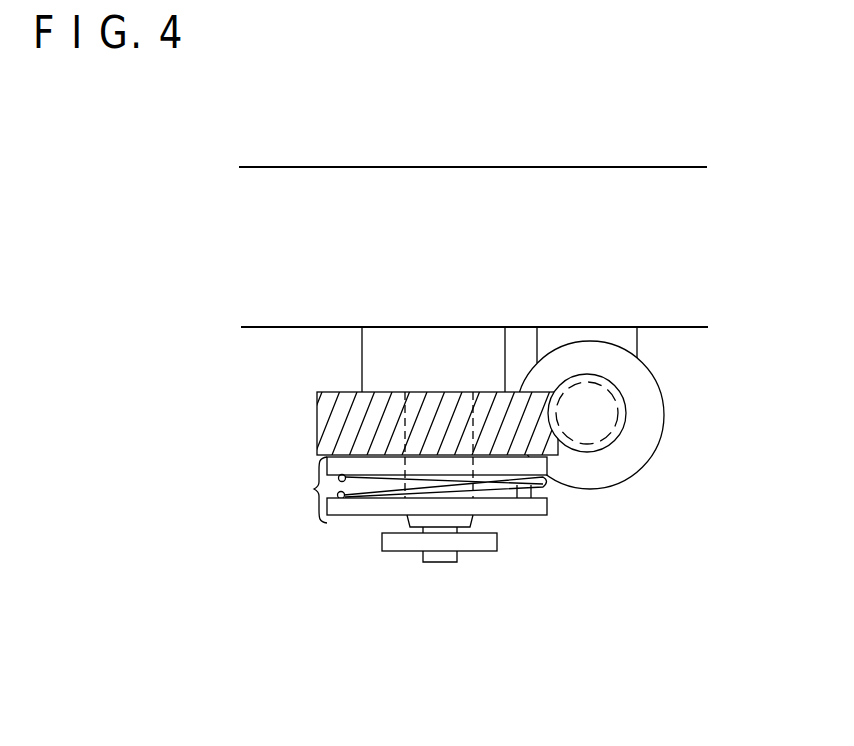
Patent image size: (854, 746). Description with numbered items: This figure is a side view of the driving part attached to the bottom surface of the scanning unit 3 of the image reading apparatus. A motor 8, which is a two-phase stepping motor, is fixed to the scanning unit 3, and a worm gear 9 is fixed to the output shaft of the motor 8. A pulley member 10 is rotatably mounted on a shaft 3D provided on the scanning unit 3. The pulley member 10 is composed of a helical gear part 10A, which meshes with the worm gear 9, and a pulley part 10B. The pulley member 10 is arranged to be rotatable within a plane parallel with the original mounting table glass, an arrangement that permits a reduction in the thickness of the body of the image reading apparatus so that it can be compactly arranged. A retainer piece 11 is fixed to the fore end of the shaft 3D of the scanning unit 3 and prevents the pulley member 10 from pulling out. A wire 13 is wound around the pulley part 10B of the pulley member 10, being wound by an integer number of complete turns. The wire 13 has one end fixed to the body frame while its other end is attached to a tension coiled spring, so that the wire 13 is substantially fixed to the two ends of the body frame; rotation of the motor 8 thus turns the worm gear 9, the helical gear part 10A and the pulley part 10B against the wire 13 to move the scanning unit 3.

The scanning unit 3 is at (579, 178).
The shaft 3D is at (372, 359).
The motor 8 is at (663, 411).
The worm gear 9 is at (597, 433).
The pulley member 10 is at (315, 460).
The helical gear part 10A is at (316, 417).
The pulley part 10B is at (315, 489).
The retainer piece 11 is at (478, 547).
The wire 13 is at (518, 485).